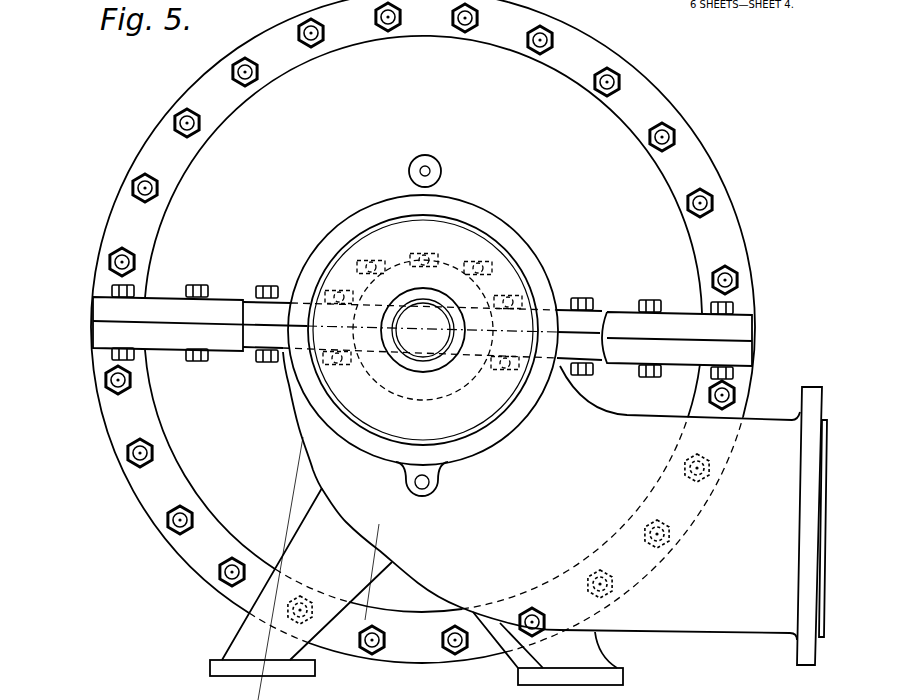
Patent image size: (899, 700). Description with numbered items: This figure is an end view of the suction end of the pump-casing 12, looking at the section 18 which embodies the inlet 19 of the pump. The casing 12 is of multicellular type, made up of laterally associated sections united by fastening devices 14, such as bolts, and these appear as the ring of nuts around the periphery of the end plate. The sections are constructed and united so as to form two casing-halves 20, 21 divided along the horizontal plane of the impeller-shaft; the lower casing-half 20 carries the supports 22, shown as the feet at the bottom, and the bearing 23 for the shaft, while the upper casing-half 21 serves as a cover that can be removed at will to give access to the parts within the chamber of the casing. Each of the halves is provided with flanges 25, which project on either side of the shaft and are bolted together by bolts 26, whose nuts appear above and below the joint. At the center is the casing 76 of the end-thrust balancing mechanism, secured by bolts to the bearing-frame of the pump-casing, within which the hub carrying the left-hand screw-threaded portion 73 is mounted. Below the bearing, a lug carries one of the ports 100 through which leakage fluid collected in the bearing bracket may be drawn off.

The casing 12 is at (436, 331).
The fastening devices 14 is at (622, 82).
The section 18 is at (157, 152).
The inlet 19 is at (542, 526).
The casing-half 20 is at (738, 380).
The casing-half 21 is at (728, 246).
The supports 22 is at (247, 636).
The bearing 23 is at (437, 392).
The flanges 25 is at (152, 330).
The bolts 26 is at (262, 290).
The left-hand screw-threaded portion 73 is at (412, 345).
The casing 76 is at (470, 420).
The ports 100 is at (427, 483).